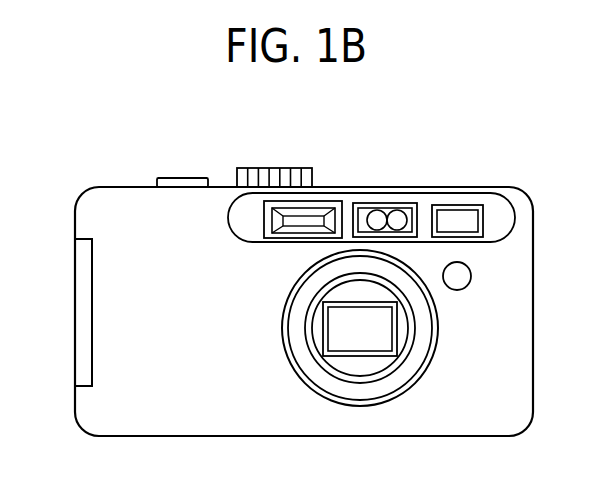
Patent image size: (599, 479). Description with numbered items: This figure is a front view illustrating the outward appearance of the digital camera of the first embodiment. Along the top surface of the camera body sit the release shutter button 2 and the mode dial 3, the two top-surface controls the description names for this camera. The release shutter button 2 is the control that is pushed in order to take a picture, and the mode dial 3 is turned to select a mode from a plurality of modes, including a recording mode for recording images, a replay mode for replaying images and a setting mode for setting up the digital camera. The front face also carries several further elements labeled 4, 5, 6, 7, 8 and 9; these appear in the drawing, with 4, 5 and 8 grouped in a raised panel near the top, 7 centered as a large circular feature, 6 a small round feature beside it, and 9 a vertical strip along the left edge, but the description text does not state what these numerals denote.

The release shutter button 2 is at (164, 178).
The mode dial 3 is at (267, 168).
The flash 4 is at (320, 212).
The sensor window 5 is at (386, 208).
The self-timer lamp 6 is at (461, 277).
The imaging lens 7 is at (384, 363).
The viewfinder window 8 is at (471, 222).
The grip 9 is at (82, 316).